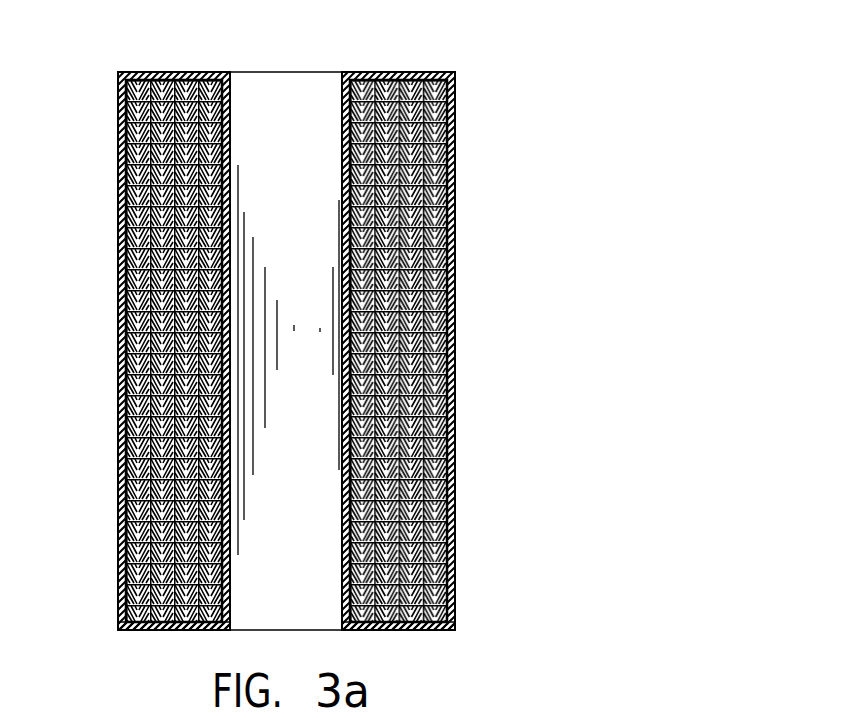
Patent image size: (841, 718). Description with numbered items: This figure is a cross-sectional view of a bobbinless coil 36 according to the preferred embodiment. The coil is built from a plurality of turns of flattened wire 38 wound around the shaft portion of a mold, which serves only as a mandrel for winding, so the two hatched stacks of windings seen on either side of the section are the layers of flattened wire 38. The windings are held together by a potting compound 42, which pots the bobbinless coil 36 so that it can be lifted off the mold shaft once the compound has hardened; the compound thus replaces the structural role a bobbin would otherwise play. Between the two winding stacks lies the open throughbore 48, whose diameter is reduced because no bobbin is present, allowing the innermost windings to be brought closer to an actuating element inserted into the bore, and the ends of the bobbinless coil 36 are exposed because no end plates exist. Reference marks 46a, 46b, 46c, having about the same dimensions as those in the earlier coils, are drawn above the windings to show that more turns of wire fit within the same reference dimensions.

The bobbinless coil 36 is at (106, 72).
The flattened wire 38 is at (456, 335).
The potting compound 42 is at (150, 626).
The reference mark 46a is at (116, 61).
The reference mark 46b is at (212, 61).
The reference mark 46c is at (367, 61).
The throughbore 48 is at (334, 134).